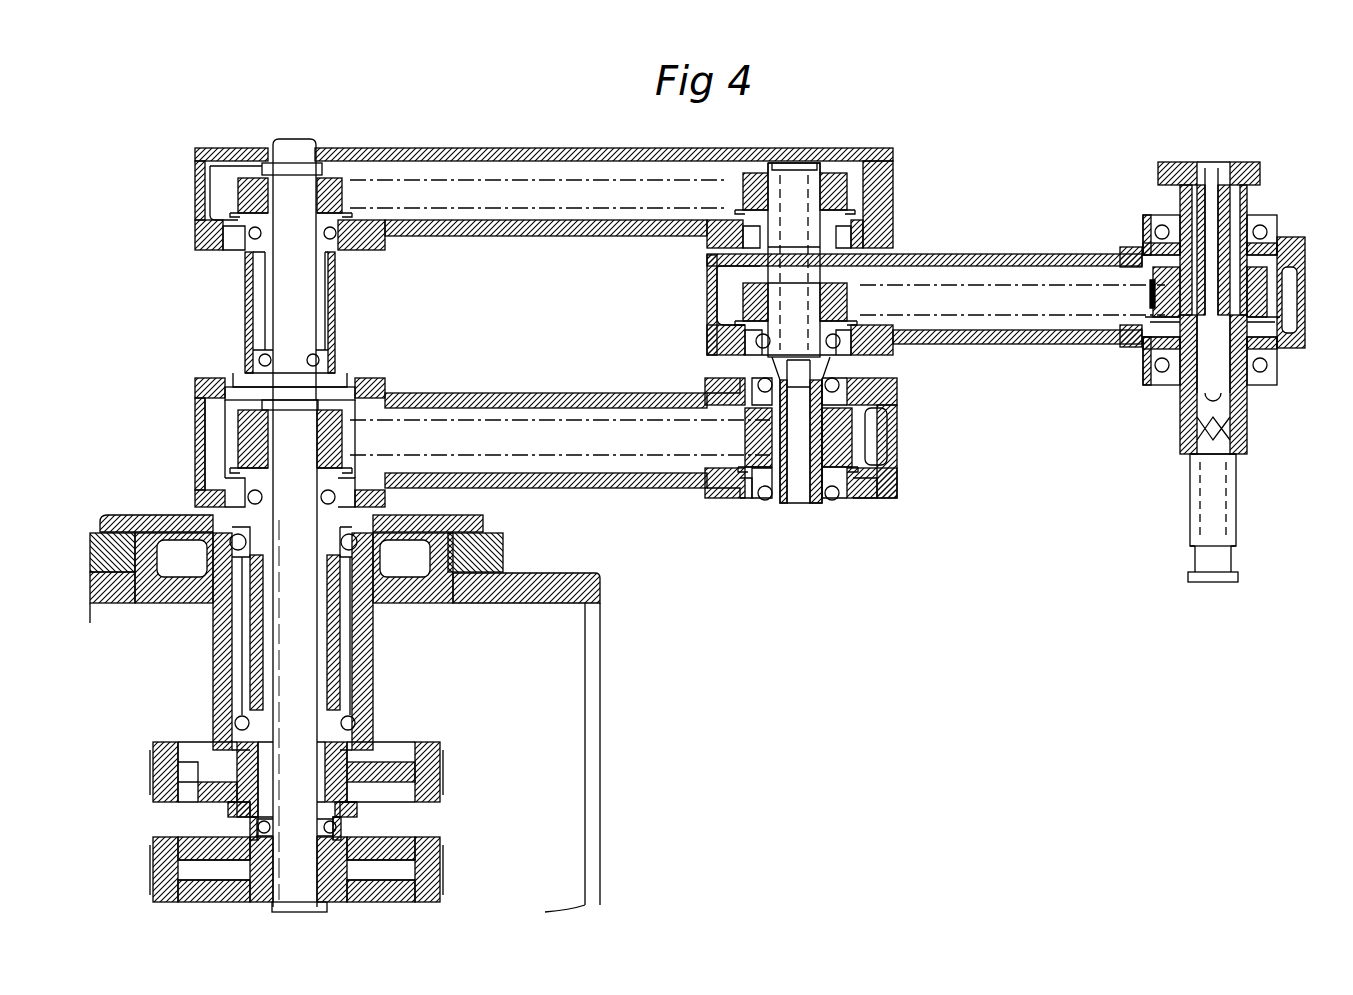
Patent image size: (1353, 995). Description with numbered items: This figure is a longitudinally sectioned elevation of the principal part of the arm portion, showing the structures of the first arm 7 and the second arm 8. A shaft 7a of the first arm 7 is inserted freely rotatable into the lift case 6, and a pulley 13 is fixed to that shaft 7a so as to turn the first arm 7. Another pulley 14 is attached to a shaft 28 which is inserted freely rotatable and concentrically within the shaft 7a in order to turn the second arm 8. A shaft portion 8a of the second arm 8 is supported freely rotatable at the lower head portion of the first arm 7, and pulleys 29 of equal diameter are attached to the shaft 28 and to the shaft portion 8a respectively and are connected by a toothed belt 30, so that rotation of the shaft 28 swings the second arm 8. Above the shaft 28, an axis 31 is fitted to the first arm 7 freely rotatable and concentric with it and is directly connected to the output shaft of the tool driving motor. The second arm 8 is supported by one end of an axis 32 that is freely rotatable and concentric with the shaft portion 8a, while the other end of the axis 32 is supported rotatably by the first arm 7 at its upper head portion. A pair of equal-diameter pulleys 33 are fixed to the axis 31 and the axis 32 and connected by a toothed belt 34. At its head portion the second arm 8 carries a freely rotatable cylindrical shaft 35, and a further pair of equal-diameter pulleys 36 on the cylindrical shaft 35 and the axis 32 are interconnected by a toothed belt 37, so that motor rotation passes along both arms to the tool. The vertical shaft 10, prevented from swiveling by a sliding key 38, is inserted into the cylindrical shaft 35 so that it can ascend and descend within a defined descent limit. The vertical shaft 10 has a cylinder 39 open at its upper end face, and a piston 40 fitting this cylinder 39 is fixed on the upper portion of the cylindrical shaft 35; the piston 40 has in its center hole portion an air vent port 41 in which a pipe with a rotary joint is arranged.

The lift case 6 is at (563, 573).
The No. 1 arm 7 is at (524, 393).
The shaft 7a is at (340, 672).
The No. 2 arm 8 is at (1000, 345).
The shaft portion 8a is at (815, 442).
The vertical shaft 10 is at (1234, 492).
The pulley 13 is at (442, 773).
The pulley 14 is at (442, 872).
The shaft 28 is at (310, 636).
The pulleys 29 is at (238, 434).
The toothed belt 30 is at (641, 472).
The axis 31 is at (272, 290).
The axis 32 is at (770, 268).
The pulleys 33 is at (238, 196).
The toothed belt 34 is at (520, 208).
The cylindrical shaft 35 is at (1183, 418).
The pulleys 36 is at (745, 302).
The toothed belt 37 is at (1003, 290).
The sliding key 38 is at (1166, 332).
The cylinder 39 is at (1215, 388).
The piston 40 is at (1218, 220).
The air vent port 41 is at (1210, 162).